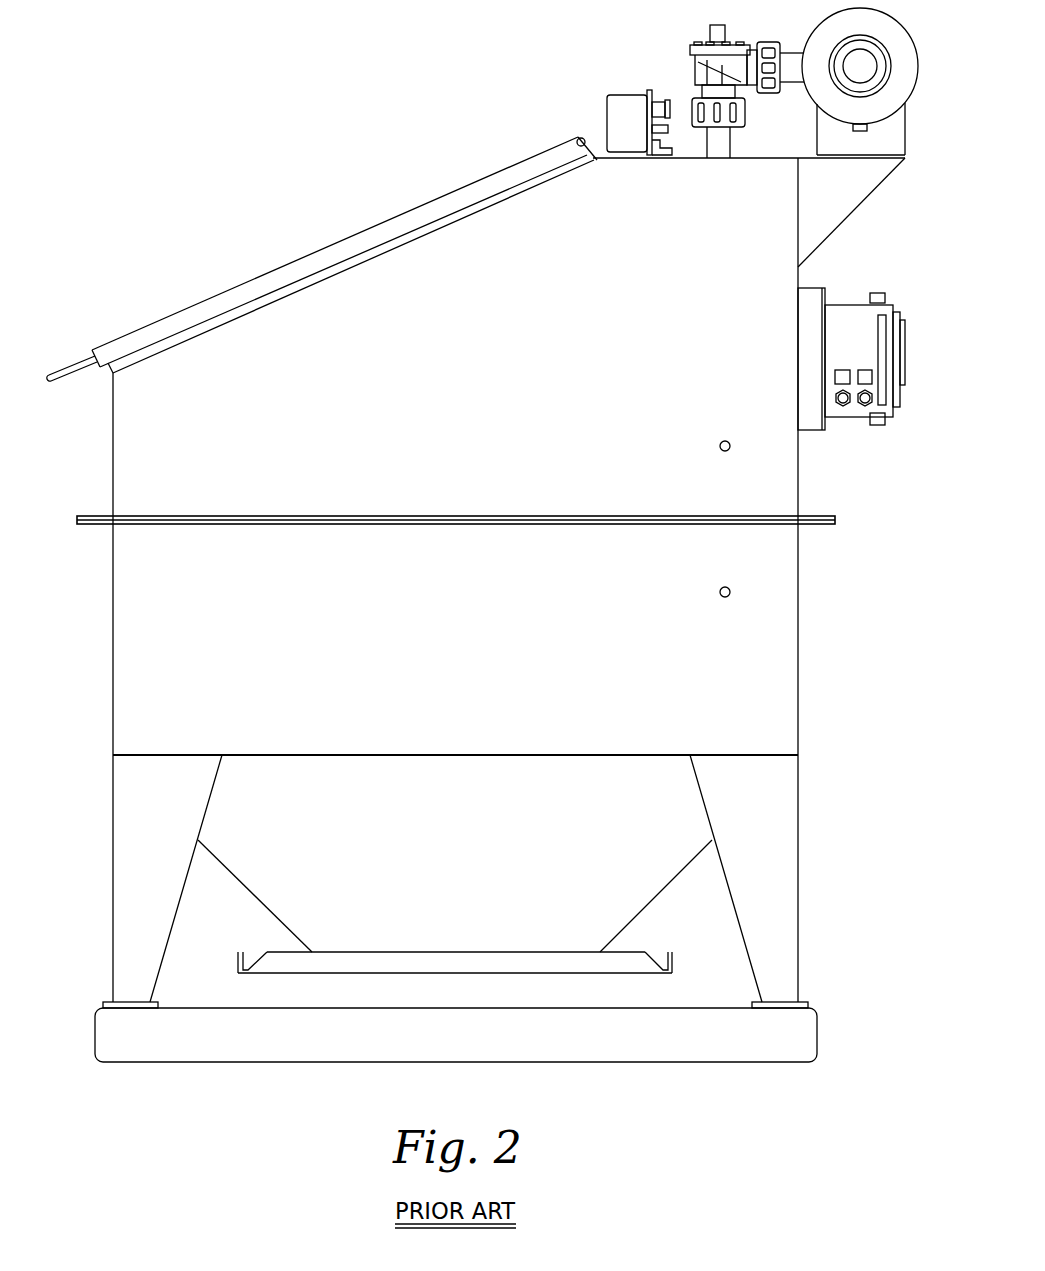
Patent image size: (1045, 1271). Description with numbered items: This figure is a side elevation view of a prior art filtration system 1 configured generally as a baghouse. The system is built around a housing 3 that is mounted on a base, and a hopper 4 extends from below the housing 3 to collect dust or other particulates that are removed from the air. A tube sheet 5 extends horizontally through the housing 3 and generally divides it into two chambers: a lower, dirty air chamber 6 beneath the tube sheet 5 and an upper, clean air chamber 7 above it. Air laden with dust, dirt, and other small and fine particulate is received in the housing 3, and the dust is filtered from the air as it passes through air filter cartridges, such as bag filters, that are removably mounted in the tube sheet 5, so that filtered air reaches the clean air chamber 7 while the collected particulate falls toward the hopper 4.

The filtration system 1 is at (274, 162).
The housing 3 is at (88, 670).
The hopper 4 is at (648, 863).
The tube sheet 5 is at (84, 523).
The dirty air chamber 6 is at (765, 652).
The clean air chamber 7 is at (140, 447).